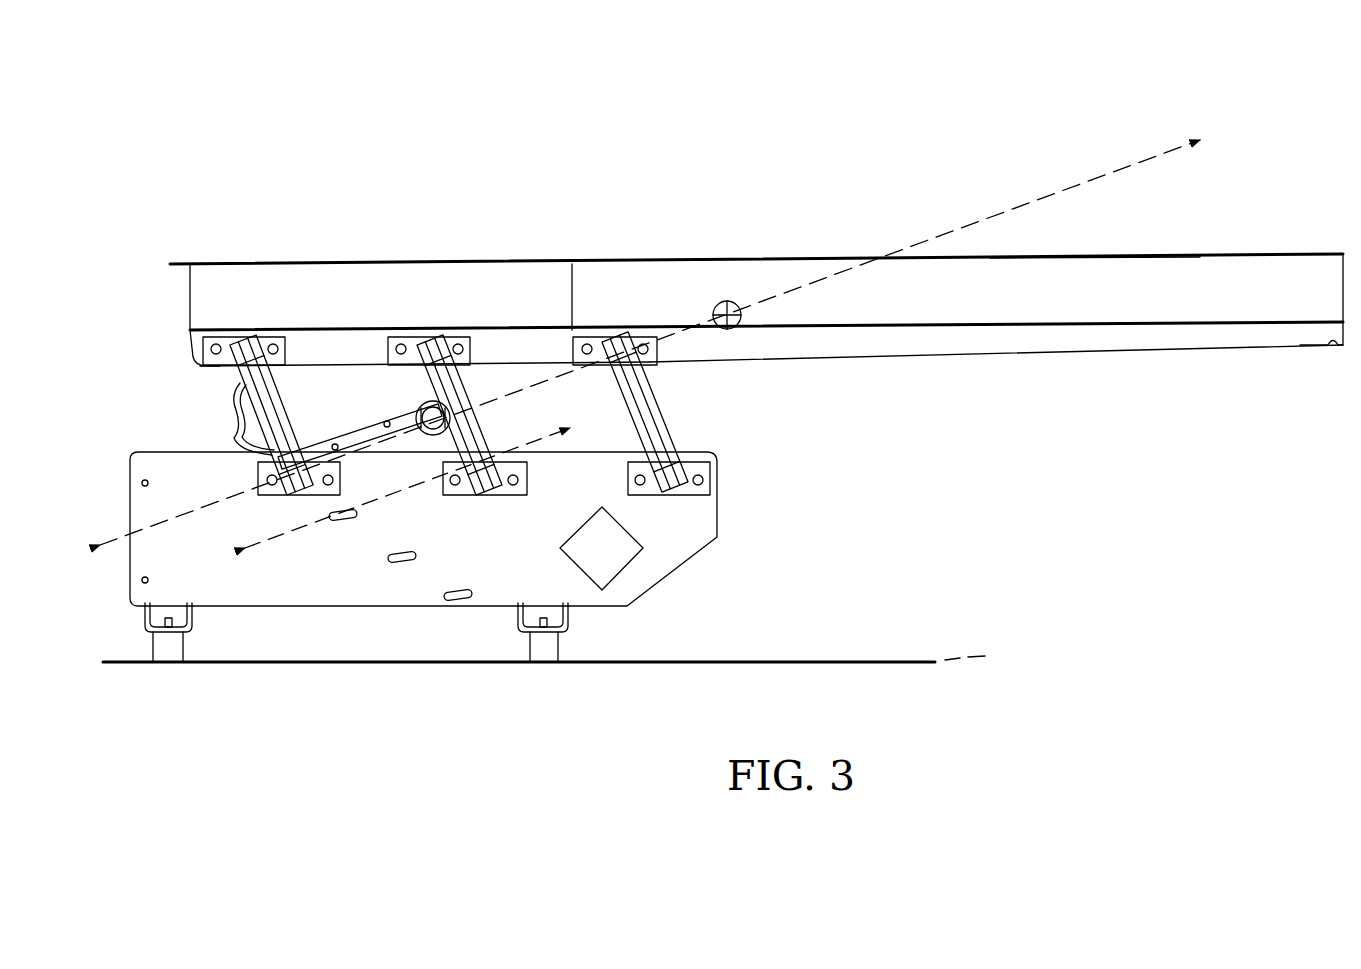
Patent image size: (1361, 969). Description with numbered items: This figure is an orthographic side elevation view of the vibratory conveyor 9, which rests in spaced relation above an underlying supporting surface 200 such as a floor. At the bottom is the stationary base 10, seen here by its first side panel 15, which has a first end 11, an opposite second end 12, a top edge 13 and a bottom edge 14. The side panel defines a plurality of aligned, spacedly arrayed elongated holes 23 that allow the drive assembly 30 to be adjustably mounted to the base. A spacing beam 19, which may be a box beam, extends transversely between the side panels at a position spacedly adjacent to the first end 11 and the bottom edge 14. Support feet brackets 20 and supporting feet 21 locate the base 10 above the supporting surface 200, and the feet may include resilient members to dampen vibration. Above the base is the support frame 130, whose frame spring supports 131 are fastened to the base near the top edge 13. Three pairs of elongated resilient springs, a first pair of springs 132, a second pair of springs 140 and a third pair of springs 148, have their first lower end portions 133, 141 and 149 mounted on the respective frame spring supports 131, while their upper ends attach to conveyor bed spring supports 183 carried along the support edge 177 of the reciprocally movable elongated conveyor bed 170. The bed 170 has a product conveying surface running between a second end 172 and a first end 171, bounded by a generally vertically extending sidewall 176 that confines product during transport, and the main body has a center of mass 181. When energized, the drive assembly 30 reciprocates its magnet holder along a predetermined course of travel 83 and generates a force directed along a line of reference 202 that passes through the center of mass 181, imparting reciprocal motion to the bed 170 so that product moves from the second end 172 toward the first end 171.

The vibratory conveyor 9 is at (863, 158).
The stationary base 10 is at (380, 610).
The first end 11 is at (719, 530).
The second end 12 is at (132, 497).
The top edge 13 is at (190, 447).
The bottom edge 14 is at (283, 608).
The first side panel 15 is at (238, 608).
The spacing beam 19 is at (625, 575).
The support feet brackets 20 is at (142, 620).
The supporting feet 21 is at (165, 650).
The elongated holes 23 is at (358, 515).
The drive assembly 30 is at (356, 412).
The course of travel 83 is at (298, 528).
The support frame 130 is at (686, 410).
The frame spring supports 131 is at (270, 497).
The first pair of elongated resilient springs 132 is at (622, 388).
The first lower end portion 133 is at (690, 445).
The second pair of elongated resilient springs 140 is at (462, 390).
The first lower end portion 141 is at (488, 455).
The third pair of elongated resilient springs 148 is at (278, 388).
The first lower end portion 149 is at (312, 448).
The reciprocally movable elongated conveyor bed 170 is at (735, 248).
The first end 171 is at (1338, 275).
The second end 172 is at (183, 290).
The vertically extending sidewalls 176 is at (992, 272).
The support edges 177 is at (992, 348).
The center of mass 181 is at (494, 353).
The conveyor bed spring supports 183 is at (262, 338).
The supporting surface 200 is at (905, 652).
The line of reference 202 is at (1093, 172).